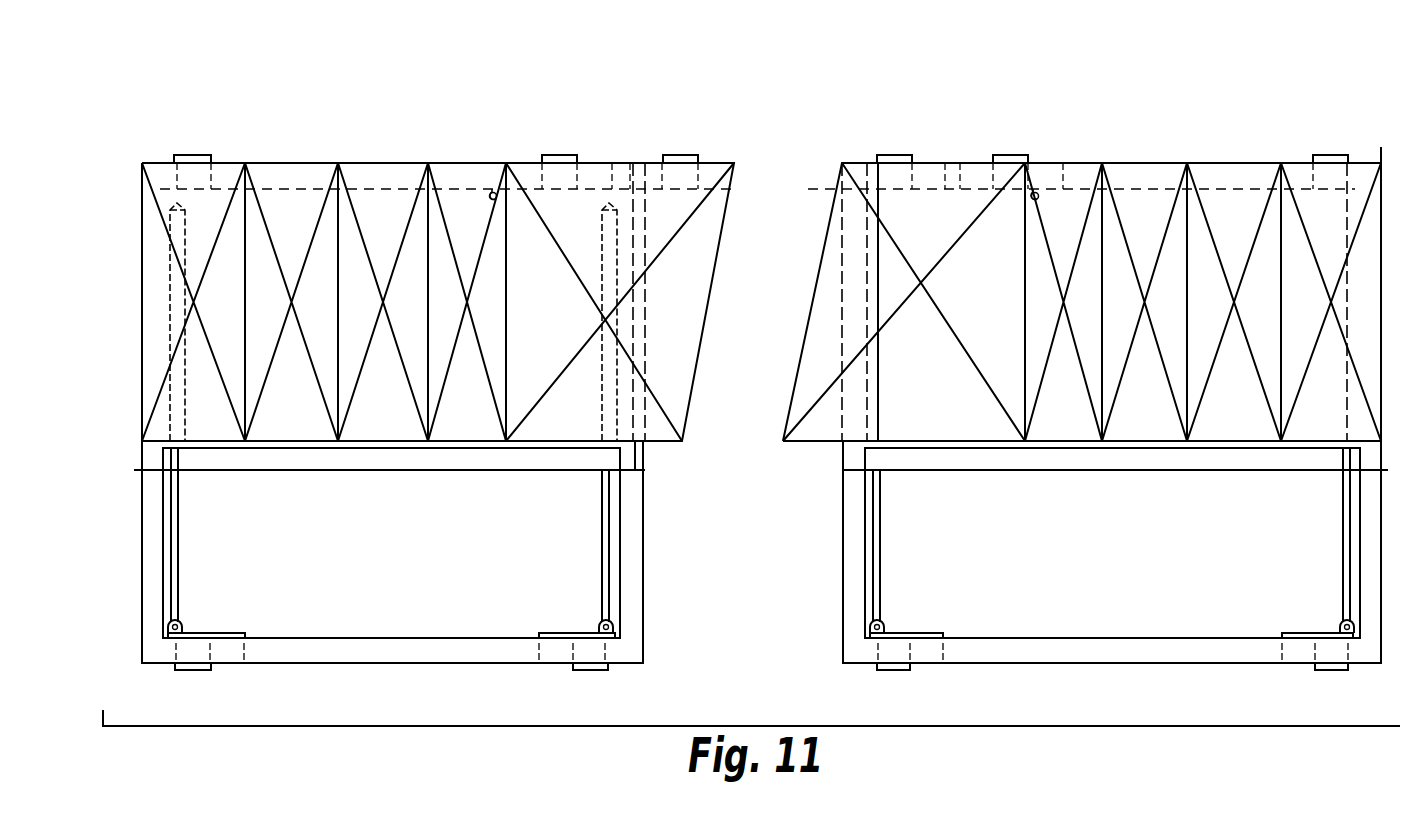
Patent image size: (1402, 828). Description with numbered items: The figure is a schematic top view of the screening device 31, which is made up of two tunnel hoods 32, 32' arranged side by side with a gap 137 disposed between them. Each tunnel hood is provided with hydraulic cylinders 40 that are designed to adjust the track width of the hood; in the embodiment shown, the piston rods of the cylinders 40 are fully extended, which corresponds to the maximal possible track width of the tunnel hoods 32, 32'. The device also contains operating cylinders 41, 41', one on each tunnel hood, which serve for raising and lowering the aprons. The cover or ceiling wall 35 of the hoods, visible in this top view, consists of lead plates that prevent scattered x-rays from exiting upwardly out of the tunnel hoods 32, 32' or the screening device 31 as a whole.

The screening device 31 is at (1082, 237).
The tunnel hood 32 is at (438, 257).
The tunnel hood 32' is at (1082, 252).
The cover or ceiling wall 35 is at (378, 420).
The hydraulic cylinder 40 is at (177, 407).
The operating cylinder 41 is at (505, 132).
The operating cylinder 41' is at (1060, 131).
The gap 137 is at (729, 448).